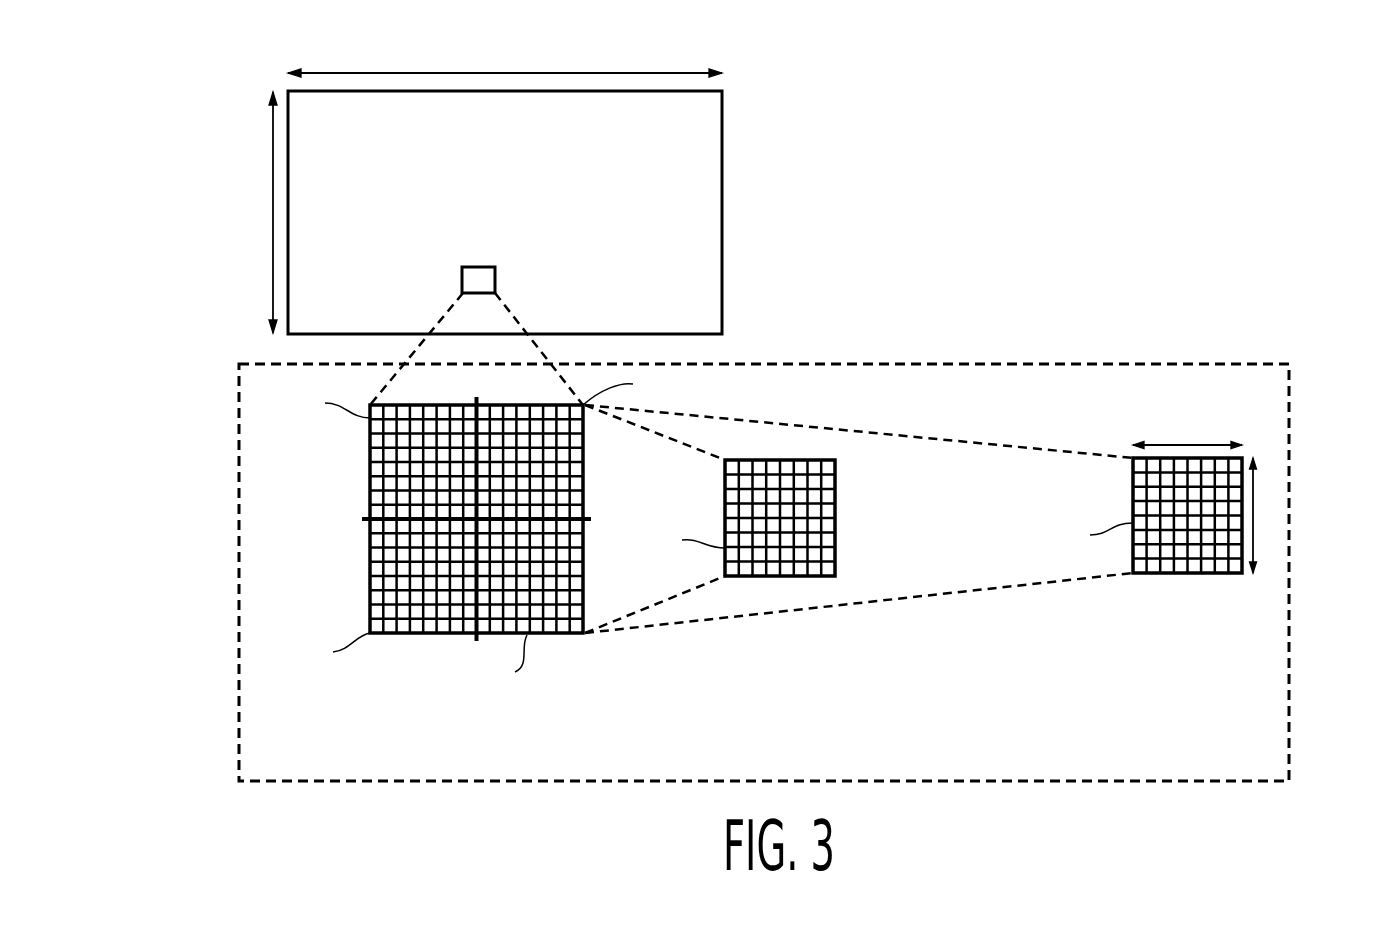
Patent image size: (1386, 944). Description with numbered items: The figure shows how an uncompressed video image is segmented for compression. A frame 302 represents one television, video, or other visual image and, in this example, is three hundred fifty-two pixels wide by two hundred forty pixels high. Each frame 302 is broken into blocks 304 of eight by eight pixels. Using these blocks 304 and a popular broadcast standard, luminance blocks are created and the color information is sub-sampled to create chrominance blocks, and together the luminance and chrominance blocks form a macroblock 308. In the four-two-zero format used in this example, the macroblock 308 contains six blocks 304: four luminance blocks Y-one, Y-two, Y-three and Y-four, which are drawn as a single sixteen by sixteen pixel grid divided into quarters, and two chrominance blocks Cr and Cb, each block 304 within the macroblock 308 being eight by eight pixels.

The frame 302 is at (722, 153).
The block 304 is at (370, 443).
The macroblock 308 is at (1289, 403).